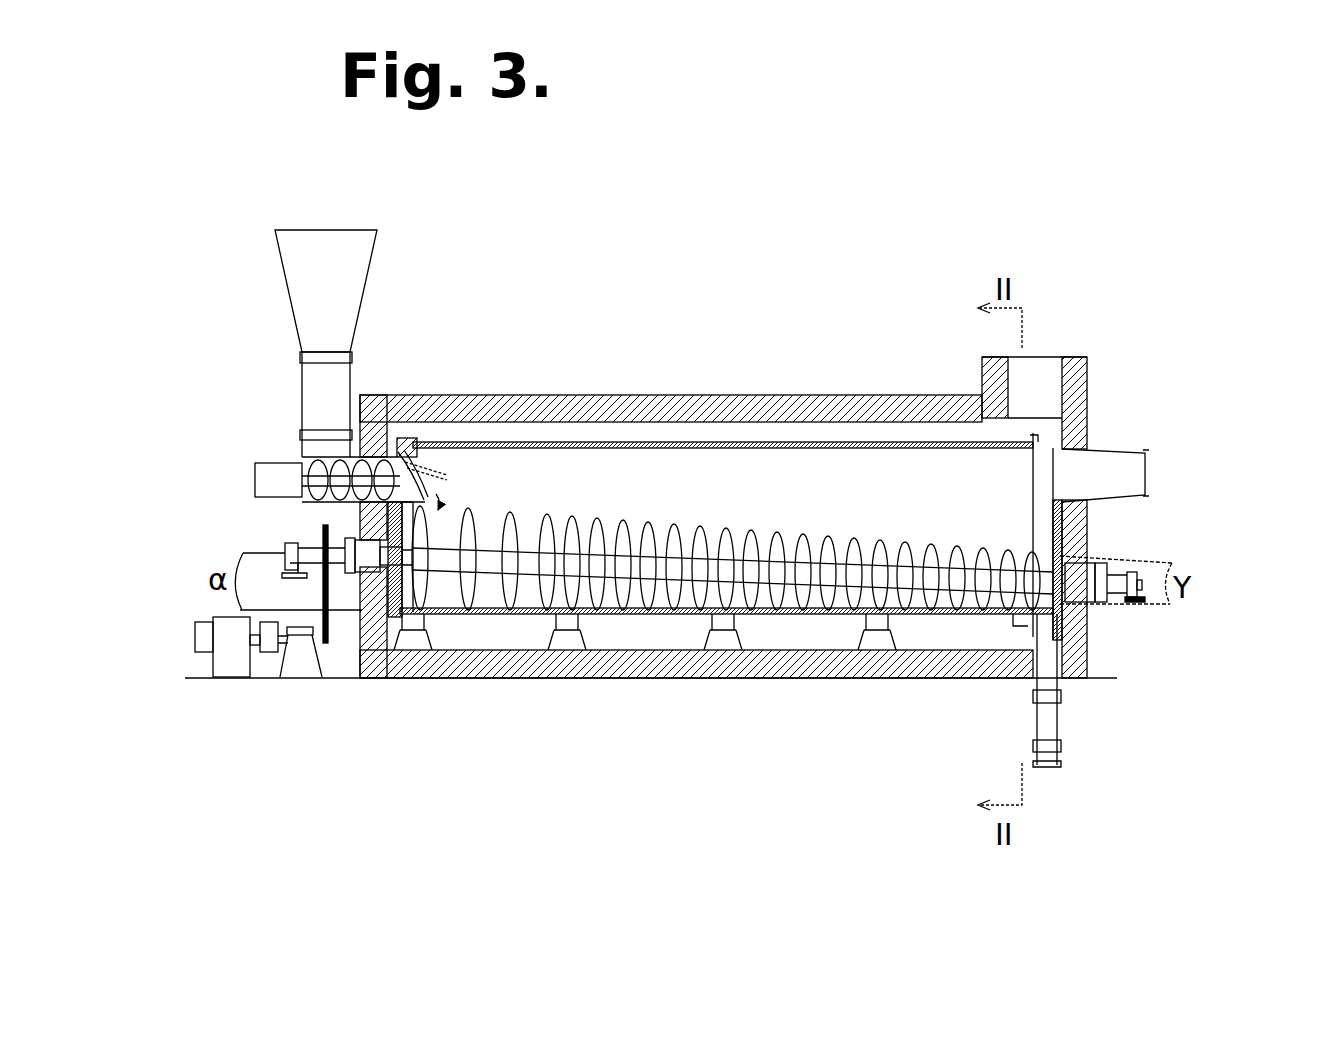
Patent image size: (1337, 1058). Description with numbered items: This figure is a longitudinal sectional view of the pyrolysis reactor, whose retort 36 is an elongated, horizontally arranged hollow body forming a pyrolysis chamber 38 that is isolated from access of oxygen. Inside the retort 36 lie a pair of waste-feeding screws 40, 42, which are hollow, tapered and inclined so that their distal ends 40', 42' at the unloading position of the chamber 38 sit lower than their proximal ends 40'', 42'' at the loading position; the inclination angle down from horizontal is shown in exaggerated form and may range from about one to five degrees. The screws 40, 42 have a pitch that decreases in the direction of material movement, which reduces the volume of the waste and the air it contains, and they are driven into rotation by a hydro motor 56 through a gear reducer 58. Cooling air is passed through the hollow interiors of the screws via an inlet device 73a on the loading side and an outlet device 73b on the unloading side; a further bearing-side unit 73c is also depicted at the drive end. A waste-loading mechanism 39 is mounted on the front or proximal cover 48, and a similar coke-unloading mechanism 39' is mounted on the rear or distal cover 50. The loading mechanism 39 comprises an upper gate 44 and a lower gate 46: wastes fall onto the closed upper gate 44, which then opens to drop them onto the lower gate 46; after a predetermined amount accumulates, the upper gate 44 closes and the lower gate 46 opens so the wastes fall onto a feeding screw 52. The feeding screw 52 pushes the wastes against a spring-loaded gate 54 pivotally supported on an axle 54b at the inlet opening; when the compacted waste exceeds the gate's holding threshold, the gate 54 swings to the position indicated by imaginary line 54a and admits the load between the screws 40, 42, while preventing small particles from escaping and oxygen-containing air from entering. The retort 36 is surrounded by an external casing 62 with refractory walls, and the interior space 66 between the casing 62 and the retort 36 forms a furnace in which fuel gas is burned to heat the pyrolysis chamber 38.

The retort 36 is at (800, 445).
The pyrolysis chamber 38 is at (905, 490).
The waste-loading mechanism 39 is at (369, 339).
The coke-unloading mechanism 39' is at (1113, 699).
The waste-feeding screw 40 is at (732, 543).
The waste-feeding screw 42 is at (732, 543).
The distal end of waste-feeding screw 40' is at (966, 707).
The distal end of waste-feeding screw 42' is at (966, 707).
The proximal end of waste-feeding screw 40'' is at (416, 657).
The proximal end of waste-feeding screw 42'' is at (416, 657).
The upper gate 44 is at (305, 353).
The lower gate 46 is at (315, 432).
The front cover 48 is at (395, 521).
The rear cover 50 is at (1065, 528).
The feeding screw 52 is at (320, 478).
The spring-loaded gate 54 is at (475, 402).
The imaginary line of shifted gate position 54a is at (448, 495).
The axle 54b is at (407, 458).
The hydro motor 56 is at (228, 648).
The gear reducer 58 is at (272, 640).
The external casing 62 is at (588, 400).
The interior space (furnace) 66 is at (687, 435).
The inlet device 73a is at (298, 573).
The outlet device 73b is at (1130, 595).
The bearing 73c is at (372, 563).